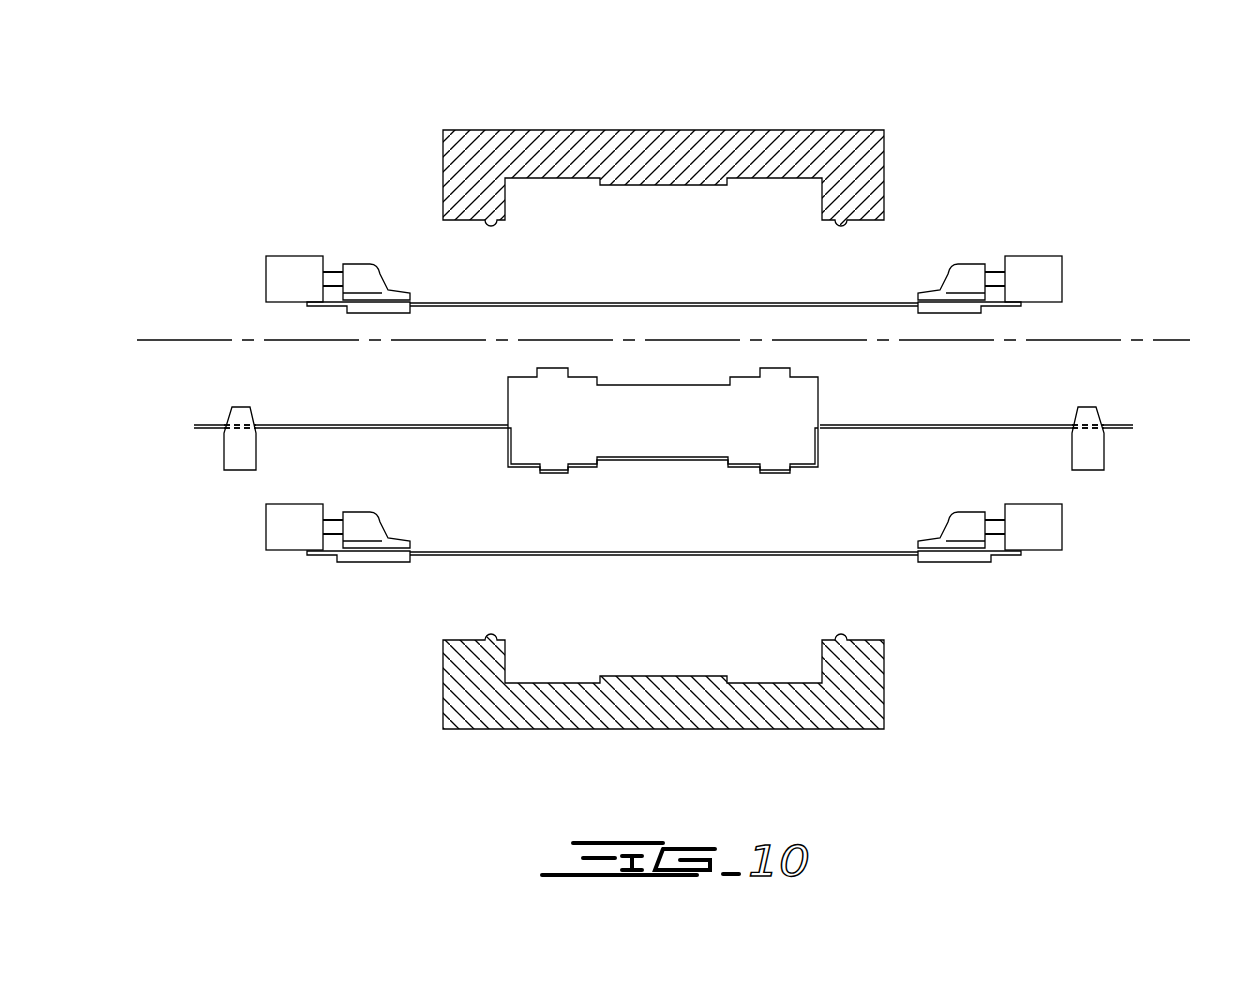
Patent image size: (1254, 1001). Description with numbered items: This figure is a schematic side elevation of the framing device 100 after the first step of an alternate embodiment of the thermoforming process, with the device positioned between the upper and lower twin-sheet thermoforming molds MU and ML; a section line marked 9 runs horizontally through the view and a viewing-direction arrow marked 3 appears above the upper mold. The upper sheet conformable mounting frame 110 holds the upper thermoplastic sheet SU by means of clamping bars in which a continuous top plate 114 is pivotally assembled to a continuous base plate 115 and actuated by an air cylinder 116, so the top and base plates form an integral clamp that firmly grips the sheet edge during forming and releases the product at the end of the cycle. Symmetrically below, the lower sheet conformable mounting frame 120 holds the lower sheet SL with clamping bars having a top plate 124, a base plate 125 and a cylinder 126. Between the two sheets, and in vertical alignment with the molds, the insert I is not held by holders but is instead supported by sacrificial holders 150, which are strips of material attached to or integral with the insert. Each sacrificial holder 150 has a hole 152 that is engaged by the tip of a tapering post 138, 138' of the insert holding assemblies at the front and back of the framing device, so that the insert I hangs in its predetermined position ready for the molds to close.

The direction of view arrow 3 is at (980, 66).
The section line 9- 9 is at (145, 378).
The framing device 100 is at (1168, 182).
The upper sheet conformable mounting frame 110 is at (160, 278).
The continuous top plate 114 is at (360, 272).
The continuous base plate 115 is at (347, 315).
The actuating air cylinder 116 is at (278, 268).
The lower sheet conformable mounting frame 120 is at (328, 607).
The top plate 124 is at (360, 522).
The base plate 125 is at (343, 559).
The cylinder 126 is at (276, 530).
The post 138 is at (1129, 450).
The post 138' is at (198, 451).
The sacrificial holder 150 is at (212, 425).
The hole 152 is at (250, 422).
The insert I is at (655, 405).
The upper twin-sheet thermoforming mold MU is at (875, 153).
The lower twin-sheet thermoforming mold ML is at (737, 722).
The upper thermoplastic sheet SU is at (801, 303).
The lower sheet SL is at (822, 555).